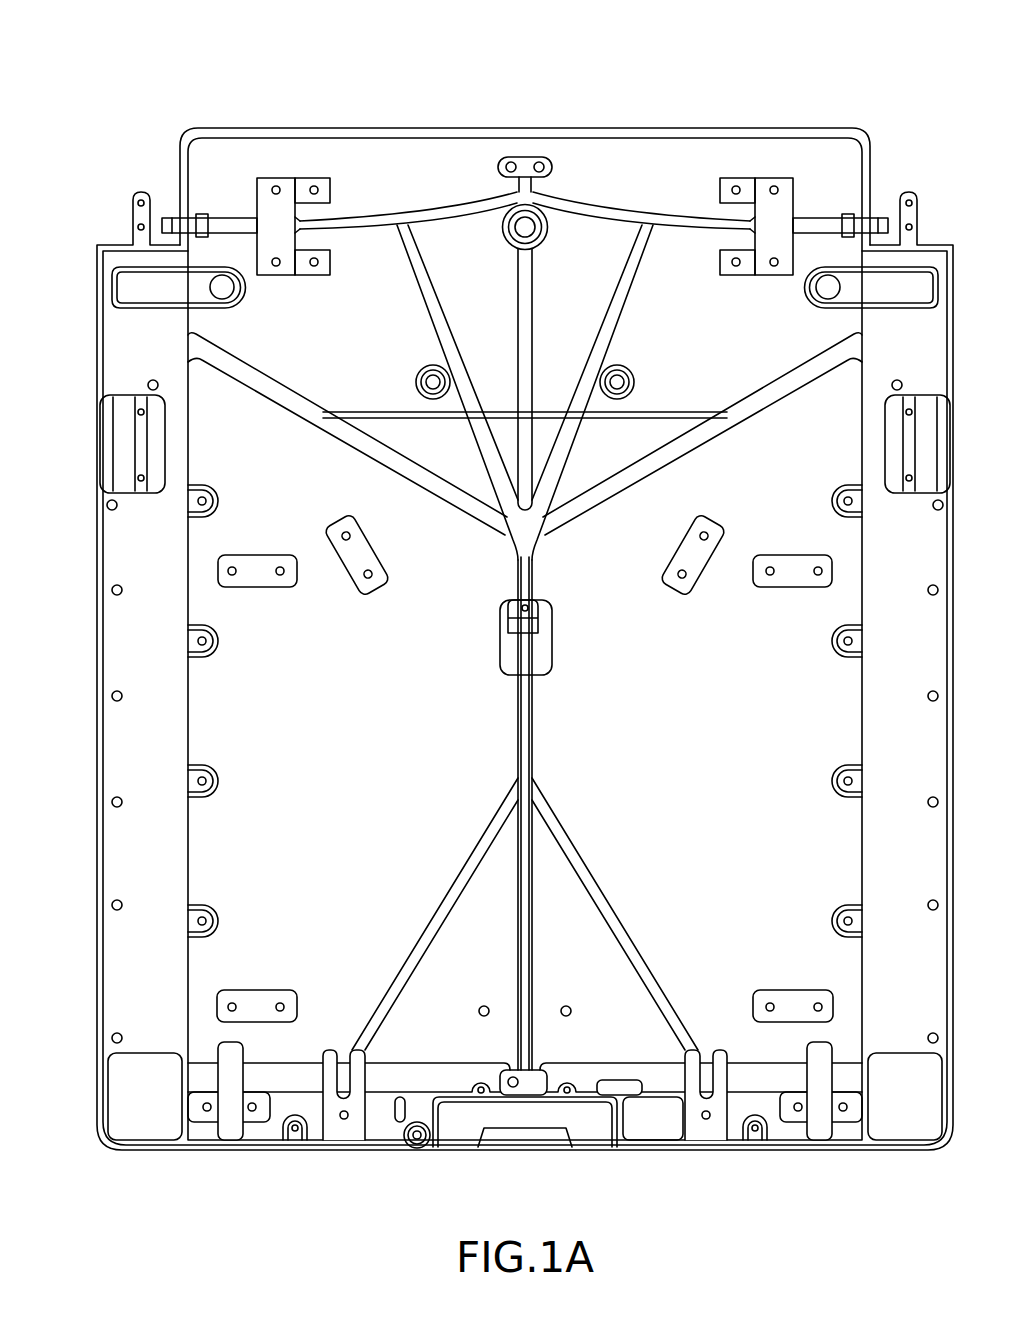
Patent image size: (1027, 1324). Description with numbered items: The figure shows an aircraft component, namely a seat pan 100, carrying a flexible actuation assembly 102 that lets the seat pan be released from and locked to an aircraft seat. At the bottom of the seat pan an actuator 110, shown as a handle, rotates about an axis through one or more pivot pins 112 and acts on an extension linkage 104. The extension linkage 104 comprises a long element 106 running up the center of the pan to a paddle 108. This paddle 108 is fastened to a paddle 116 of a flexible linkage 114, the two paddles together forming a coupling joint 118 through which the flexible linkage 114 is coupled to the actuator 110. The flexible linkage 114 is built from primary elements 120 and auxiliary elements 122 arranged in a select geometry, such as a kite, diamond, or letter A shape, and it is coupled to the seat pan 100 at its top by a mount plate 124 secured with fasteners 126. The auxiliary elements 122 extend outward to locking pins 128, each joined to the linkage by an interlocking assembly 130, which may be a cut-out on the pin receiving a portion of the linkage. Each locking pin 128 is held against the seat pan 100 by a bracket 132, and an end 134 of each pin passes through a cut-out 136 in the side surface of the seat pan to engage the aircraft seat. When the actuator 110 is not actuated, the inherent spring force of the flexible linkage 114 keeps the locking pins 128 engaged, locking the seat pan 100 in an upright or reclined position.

The seat pan 100 is at (494, 596).
The flexible actuation assembly 102 is at (525, 657).
The extension linkage 104 is at (525, 649).
The element 106 is at (525, 813).
The paddle 108 is at (492, 624).
The actuator 110 is at (597, 1135).
The pivot pin 112 is at (417, 1150).
The flexible linkage 114 is at (525, 310).
The paddle 116 is at (485, 603).
The coupling joint 118 is at (521, 605).
The primary elements 120 is at (478, 447).
The auxiliary elements 122 is at (447, 210).
The mount plate 124 is at (525, 126).
The fasteners 126 is at (509, 163).
The locking pins 128 is at (245, 225).
The interlocking assembly 130 is at (298, 225).
The bracket 132 is at (278, 178).
The end 134 is at (165, 215).
The cut-out 136 is at (163, 216).